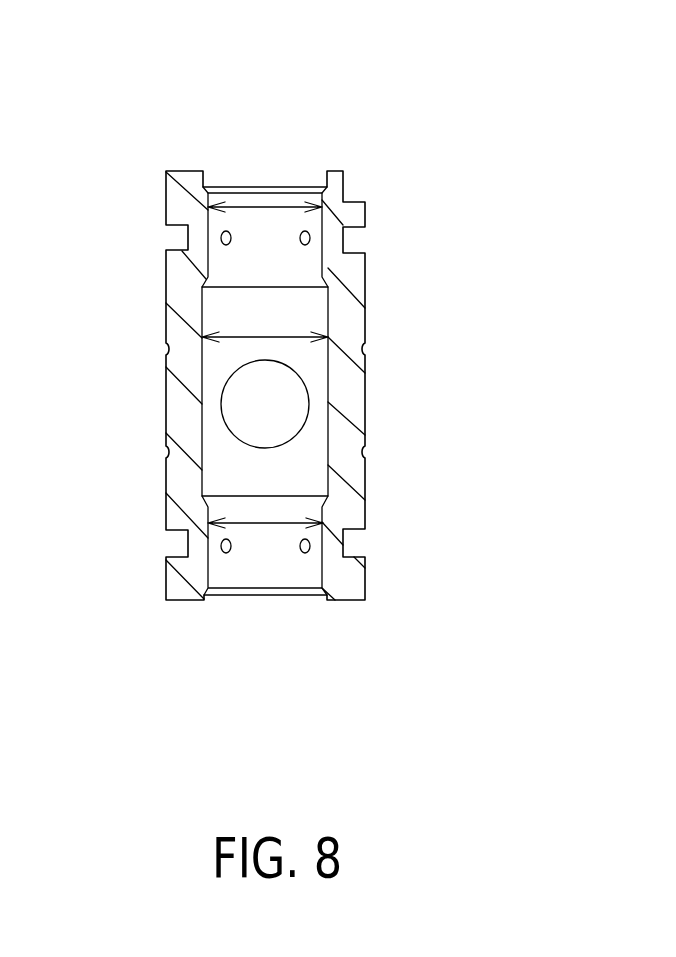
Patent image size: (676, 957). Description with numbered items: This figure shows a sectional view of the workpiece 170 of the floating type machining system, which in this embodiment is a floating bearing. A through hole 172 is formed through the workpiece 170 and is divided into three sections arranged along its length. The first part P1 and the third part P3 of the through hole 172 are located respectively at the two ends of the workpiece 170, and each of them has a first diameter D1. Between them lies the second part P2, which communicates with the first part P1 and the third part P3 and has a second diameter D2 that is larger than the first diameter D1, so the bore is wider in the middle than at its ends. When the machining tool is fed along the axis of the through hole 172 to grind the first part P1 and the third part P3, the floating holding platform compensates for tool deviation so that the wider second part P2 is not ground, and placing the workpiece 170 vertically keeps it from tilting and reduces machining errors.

The workpiece 170 is at (433, 103).
The through hole 172 is at (286, 108).
The first part P1 is at (193, 270).
The second part P2 is at (193, 377).
The third part P3 is at (193, 580).
The first diameter D1 is at (265, 379).
The second diameter D2 is at (265, 324).